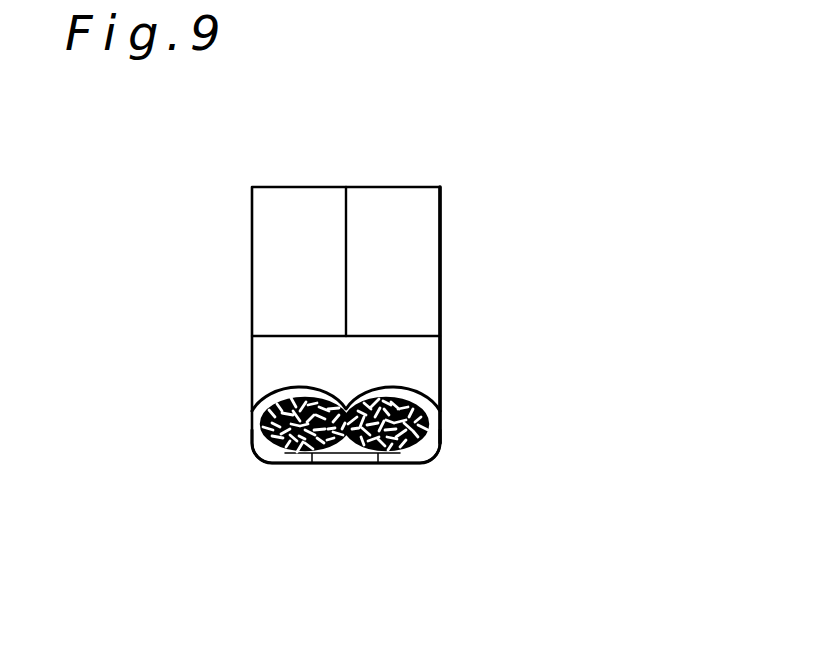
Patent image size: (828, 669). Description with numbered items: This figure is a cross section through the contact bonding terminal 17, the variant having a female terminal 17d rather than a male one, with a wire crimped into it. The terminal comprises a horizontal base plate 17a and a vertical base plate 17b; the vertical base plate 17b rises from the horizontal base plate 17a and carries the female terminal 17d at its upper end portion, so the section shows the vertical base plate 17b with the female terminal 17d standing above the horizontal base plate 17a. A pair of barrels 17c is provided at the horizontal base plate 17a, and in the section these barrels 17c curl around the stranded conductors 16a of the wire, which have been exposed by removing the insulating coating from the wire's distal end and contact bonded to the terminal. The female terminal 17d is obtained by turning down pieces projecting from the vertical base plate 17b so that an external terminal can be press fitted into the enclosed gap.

The contact bonding terminal 17 is at (478, 376).
The horizontal base plate 17a is at (292, 463).
The vertical base plate 17b is at (398, 360).
The barrels 17c is at (537, 466).
The female terminal 17d is at (393, 230).
The stranded conductors 16a is at (375, 462).